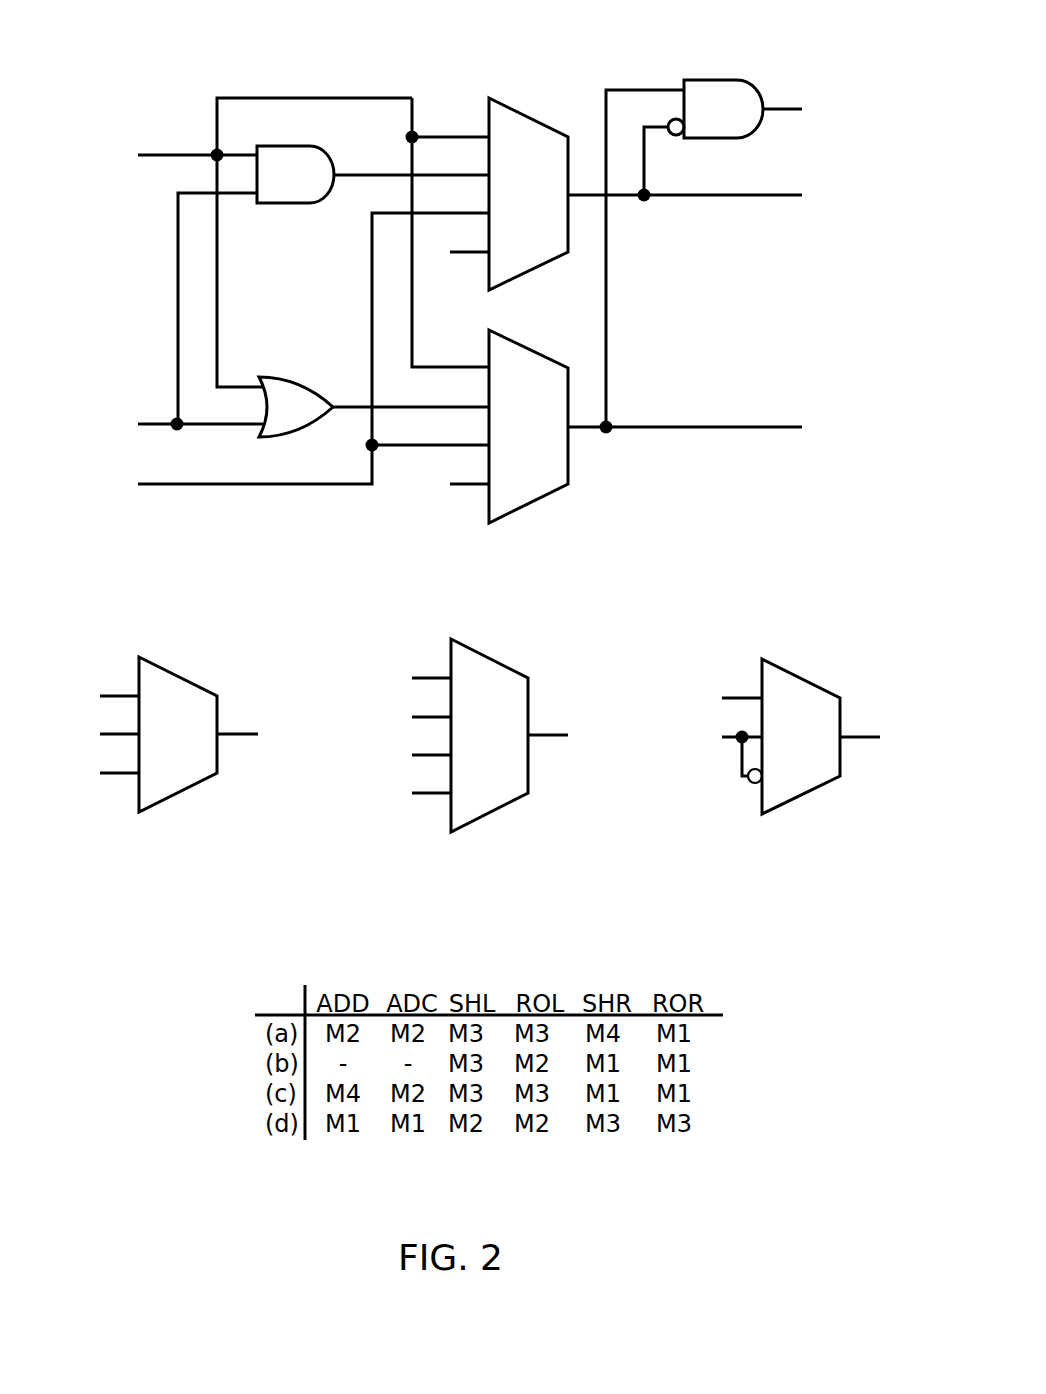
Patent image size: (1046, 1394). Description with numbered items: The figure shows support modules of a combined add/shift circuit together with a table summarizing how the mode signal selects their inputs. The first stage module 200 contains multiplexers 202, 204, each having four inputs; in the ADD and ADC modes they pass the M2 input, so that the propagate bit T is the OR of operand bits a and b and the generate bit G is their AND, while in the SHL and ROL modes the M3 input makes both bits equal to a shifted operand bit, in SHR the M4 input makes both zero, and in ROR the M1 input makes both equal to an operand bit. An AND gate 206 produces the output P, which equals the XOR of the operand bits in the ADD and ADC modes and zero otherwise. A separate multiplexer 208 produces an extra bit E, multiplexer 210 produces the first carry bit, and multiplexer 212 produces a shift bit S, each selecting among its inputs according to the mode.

The first stage module 200 is at (172, 72).
The multiplexer 202 is at (532, 351).
The multiplexer 204 is at (532, 119).
The AND gate 206 is at (704, 79).
The multiplexer 208 is at (180, 677).
The multiplexer 210 is at (492, 659).
The multiplexer 212 is at (803, 678).